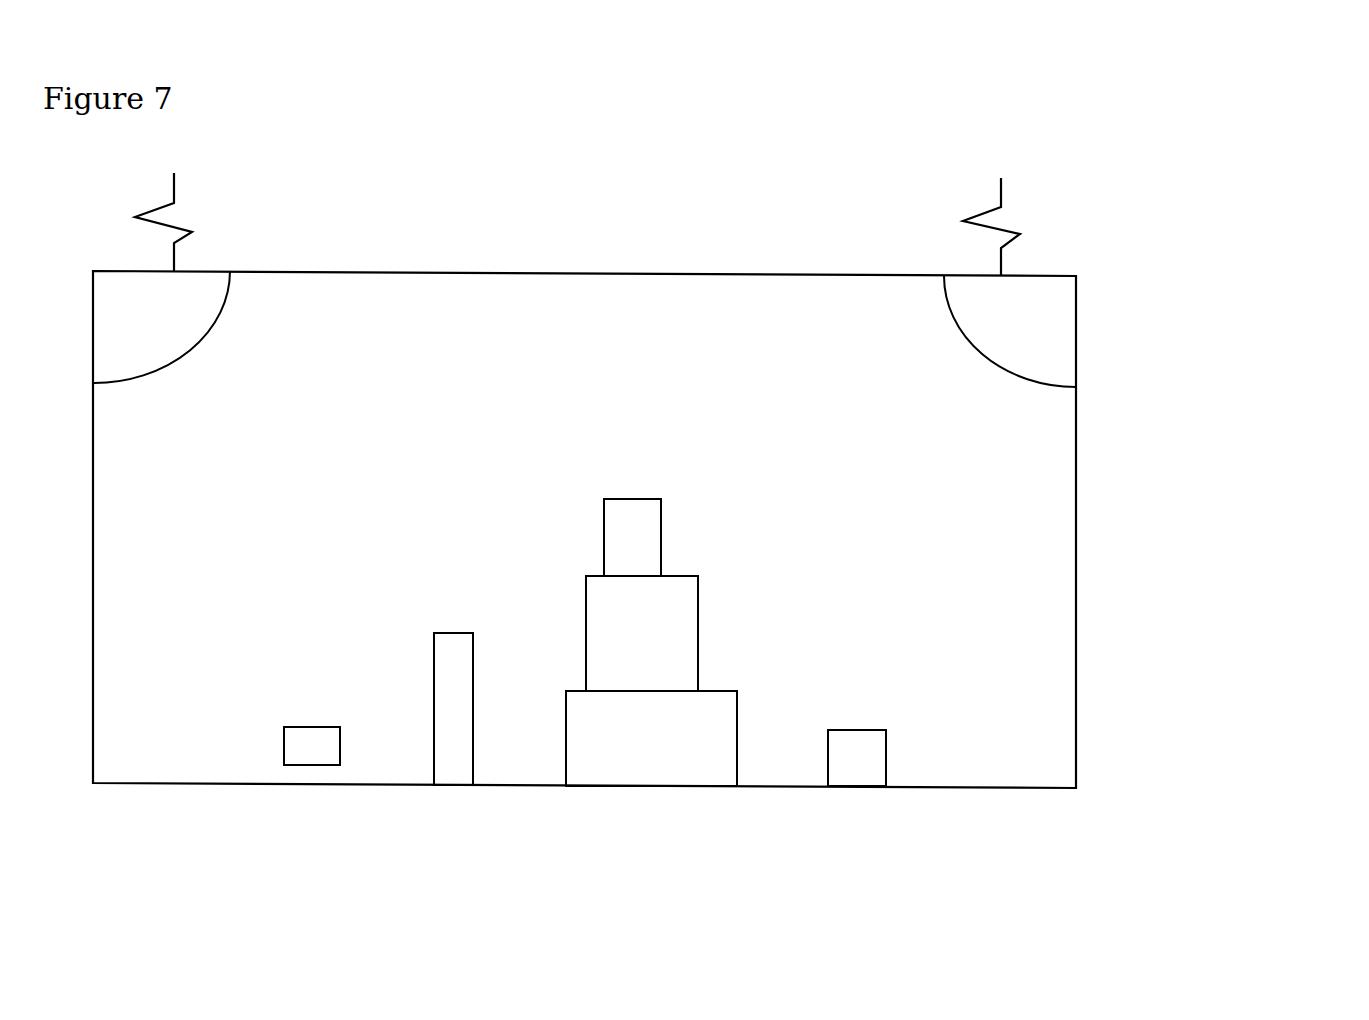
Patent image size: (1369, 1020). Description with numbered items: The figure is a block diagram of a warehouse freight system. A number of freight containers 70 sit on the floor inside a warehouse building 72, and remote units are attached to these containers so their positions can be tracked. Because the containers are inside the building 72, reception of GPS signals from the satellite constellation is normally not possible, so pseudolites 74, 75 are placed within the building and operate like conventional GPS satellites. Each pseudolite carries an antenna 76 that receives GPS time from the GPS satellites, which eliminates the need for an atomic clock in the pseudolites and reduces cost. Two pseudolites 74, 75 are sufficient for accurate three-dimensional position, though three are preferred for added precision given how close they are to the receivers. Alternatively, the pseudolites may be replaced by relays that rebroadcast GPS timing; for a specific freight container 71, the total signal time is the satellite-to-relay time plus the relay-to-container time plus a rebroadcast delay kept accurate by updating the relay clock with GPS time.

The freight containers 70 is at (677, 607).
The freight container 71 is at (449, 648).
The warehouse building 72 is at (1075, 600).
The pseudolite 74 is at (146, 314).
The pseudolite 75 is at (1031, 319).
The antenna 76 is at (1003, 203).